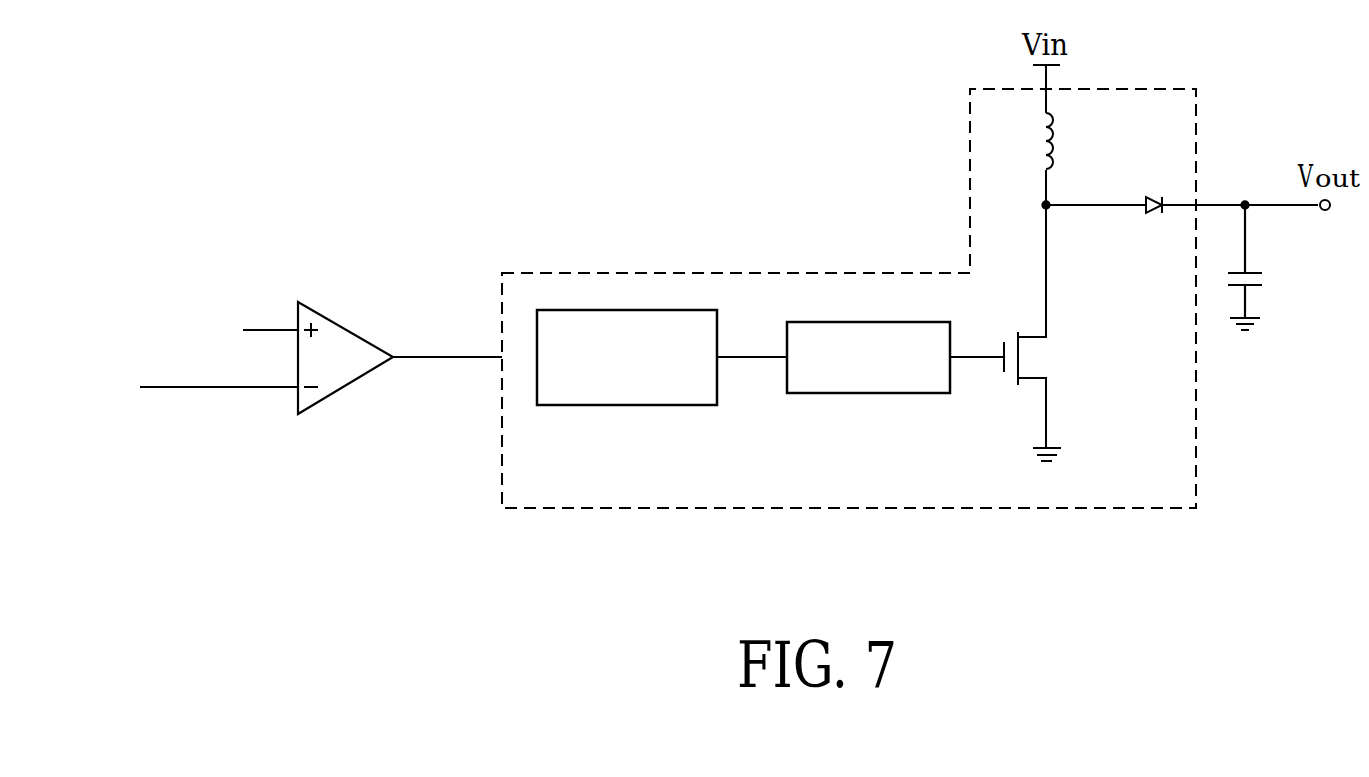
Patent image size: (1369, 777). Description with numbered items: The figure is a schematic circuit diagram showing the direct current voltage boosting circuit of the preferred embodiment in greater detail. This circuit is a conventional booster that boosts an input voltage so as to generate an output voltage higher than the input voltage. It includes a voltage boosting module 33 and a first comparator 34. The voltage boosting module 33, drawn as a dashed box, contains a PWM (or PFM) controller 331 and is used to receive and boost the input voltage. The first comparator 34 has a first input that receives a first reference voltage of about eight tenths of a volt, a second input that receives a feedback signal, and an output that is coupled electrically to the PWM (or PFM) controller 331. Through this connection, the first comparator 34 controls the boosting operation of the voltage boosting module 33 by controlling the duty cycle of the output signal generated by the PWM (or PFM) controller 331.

The voltage boosting module 33 is at (742, 272).
The PWM (or PFM) controller 331 is at (617, 310).
The first comparator 34 is at (345, 326).